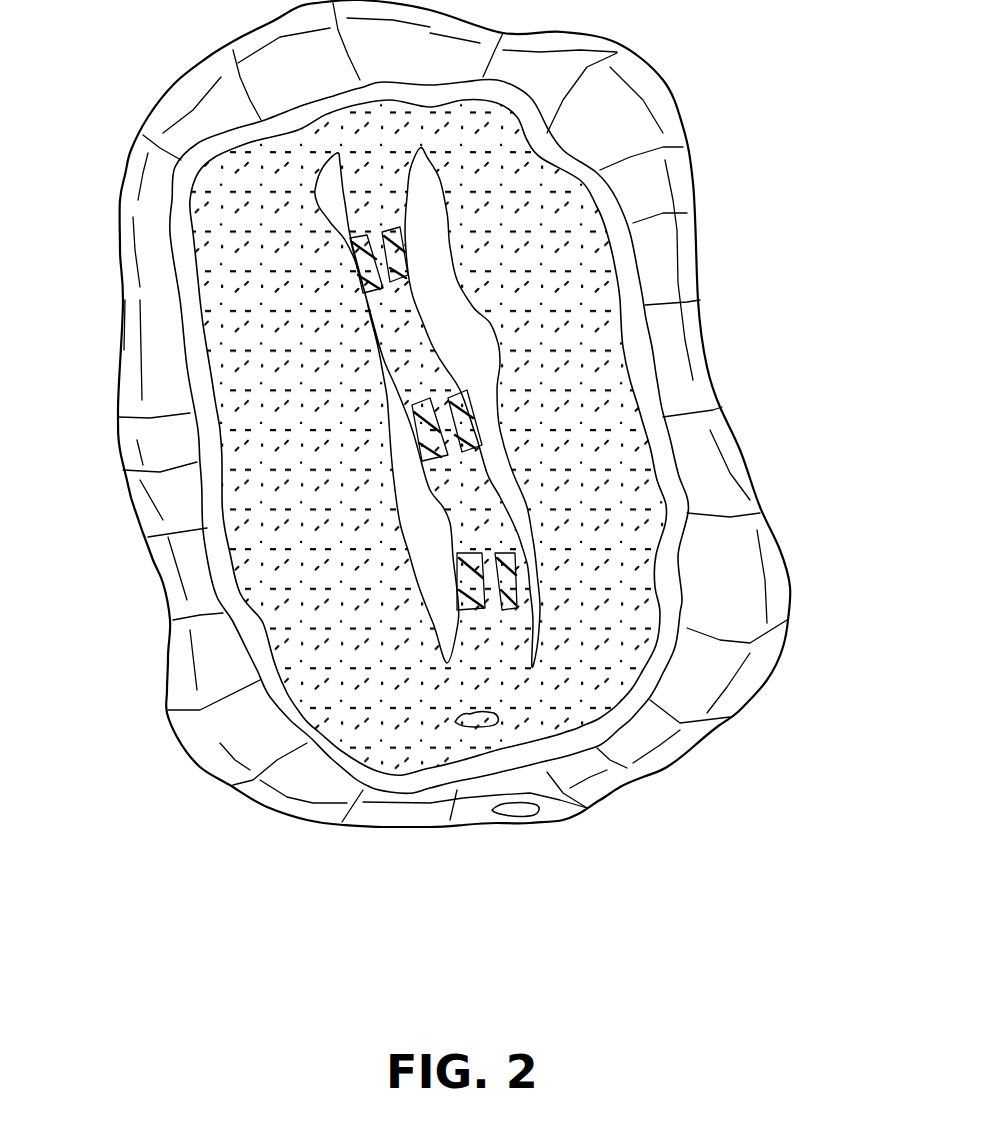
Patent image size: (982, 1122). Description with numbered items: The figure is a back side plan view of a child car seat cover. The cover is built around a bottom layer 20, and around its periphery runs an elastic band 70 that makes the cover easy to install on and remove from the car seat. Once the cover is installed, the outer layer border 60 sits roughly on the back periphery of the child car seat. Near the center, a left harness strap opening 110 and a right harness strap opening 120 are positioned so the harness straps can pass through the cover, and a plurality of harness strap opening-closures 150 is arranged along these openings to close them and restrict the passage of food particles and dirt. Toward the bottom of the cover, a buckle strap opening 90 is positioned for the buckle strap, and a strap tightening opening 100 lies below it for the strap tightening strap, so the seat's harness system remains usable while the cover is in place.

The bottom layer 20 is at (238, 720).
The outer layer border 60 is at (653, 87).
The elastic band 70 is at (630, 287).
The buckle strap opening 90 is at (478, 718).
The strap tightening opening 100 is at (515, 808).
The left harness strap opening 110 is at (467, 338).
The right harness strap opening 120 is at (415, 518).
The harness strap opening-closure 150 is at (513, 584).